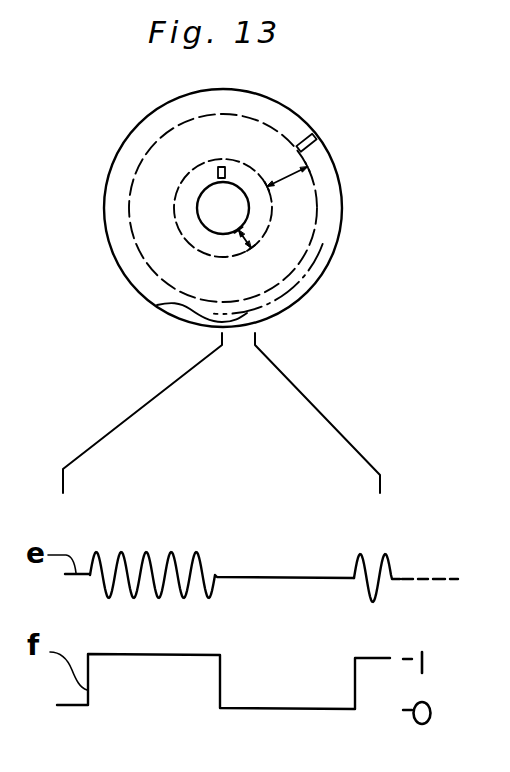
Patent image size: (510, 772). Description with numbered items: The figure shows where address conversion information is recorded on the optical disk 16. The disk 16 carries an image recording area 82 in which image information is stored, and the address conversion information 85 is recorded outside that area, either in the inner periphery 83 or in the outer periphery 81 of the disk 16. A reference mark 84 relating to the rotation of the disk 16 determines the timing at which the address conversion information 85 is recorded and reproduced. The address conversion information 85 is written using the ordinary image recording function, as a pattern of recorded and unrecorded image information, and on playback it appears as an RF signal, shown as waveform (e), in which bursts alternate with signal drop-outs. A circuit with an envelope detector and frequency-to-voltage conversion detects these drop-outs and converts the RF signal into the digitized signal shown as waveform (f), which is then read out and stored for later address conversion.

The optical disk 16 is at (300, 114).
The outer periphery 81 is at (317, 139).
The image recording area 82 is at (290, 177).
The inner periphery 83 is at (252, 242).
The reference mark 84 is at (218, 172).
The address conversion information 85 is at (157, 305).